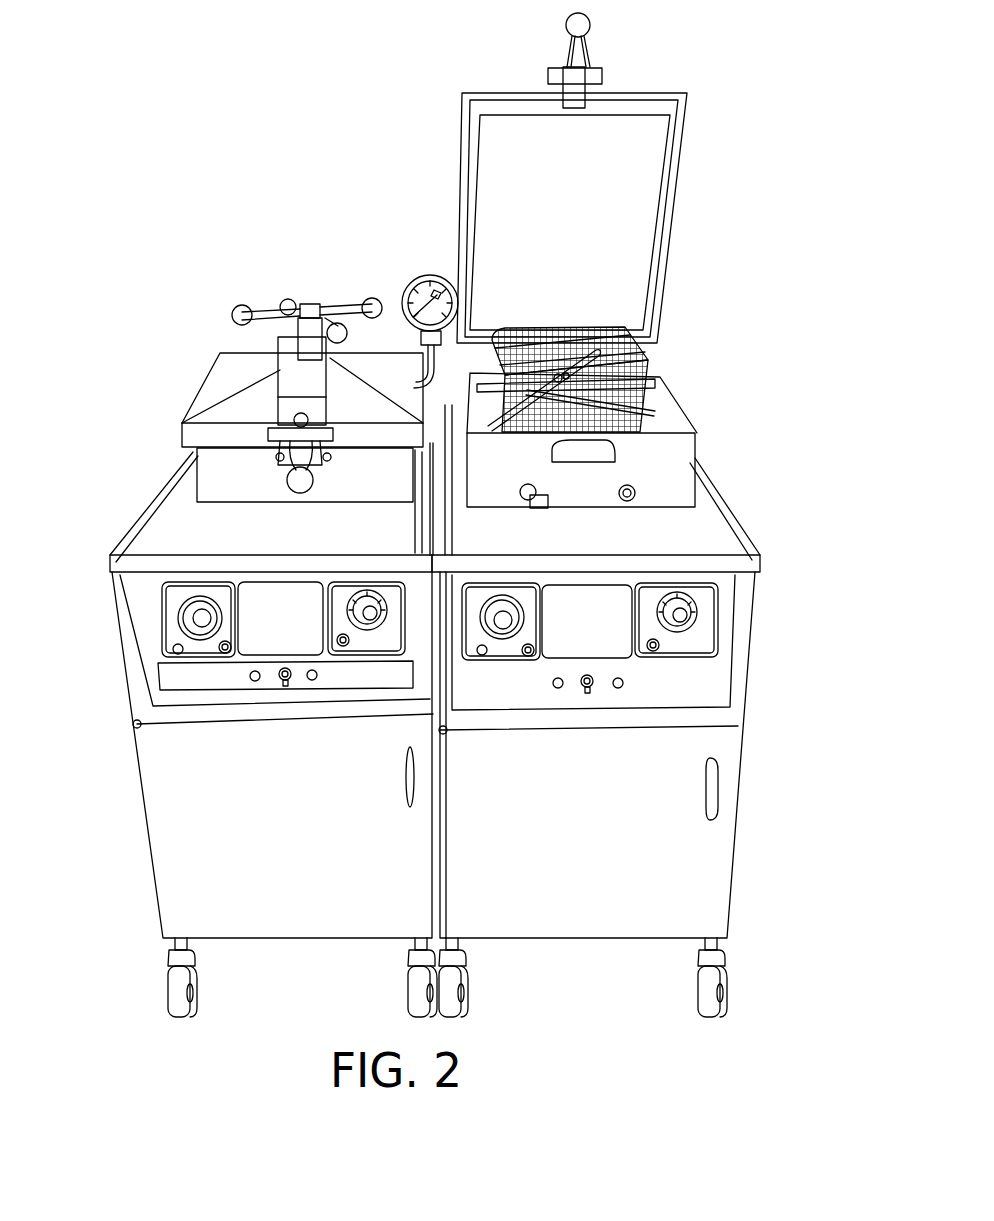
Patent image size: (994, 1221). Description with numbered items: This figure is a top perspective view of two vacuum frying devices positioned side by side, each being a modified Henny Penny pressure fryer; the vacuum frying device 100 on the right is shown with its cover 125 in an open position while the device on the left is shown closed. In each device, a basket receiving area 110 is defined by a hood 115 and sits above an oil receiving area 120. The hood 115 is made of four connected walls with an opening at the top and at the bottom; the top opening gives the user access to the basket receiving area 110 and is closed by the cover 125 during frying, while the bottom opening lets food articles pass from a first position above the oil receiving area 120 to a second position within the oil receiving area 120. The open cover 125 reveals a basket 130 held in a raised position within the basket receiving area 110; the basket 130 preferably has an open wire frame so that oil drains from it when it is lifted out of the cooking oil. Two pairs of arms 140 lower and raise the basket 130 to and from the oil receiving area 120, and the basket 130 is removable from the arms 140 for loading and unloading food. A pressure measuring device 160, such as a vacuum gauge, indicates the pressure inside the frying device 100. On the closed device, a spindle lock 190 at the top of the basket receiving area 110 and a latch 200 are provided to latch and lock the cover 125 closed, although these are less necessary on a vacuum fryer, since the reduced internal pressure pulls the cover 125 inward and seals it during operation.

The vacuum frying device 100 is at (127, 760).
The basket receiving area 110 is at (215, 465).
The hood 115 is at (329, 487).
The oil receiving area 120 is at (185, 535).
The cover 125 is at (228, 380).
The basket 130 is at (645, 362).
The arms 140 is at (530, 397).
The pressure measuring device 160 is at (428, 278).
The spindle lock 190 is at (262, 305).
The latch 200 is at (300, 493).